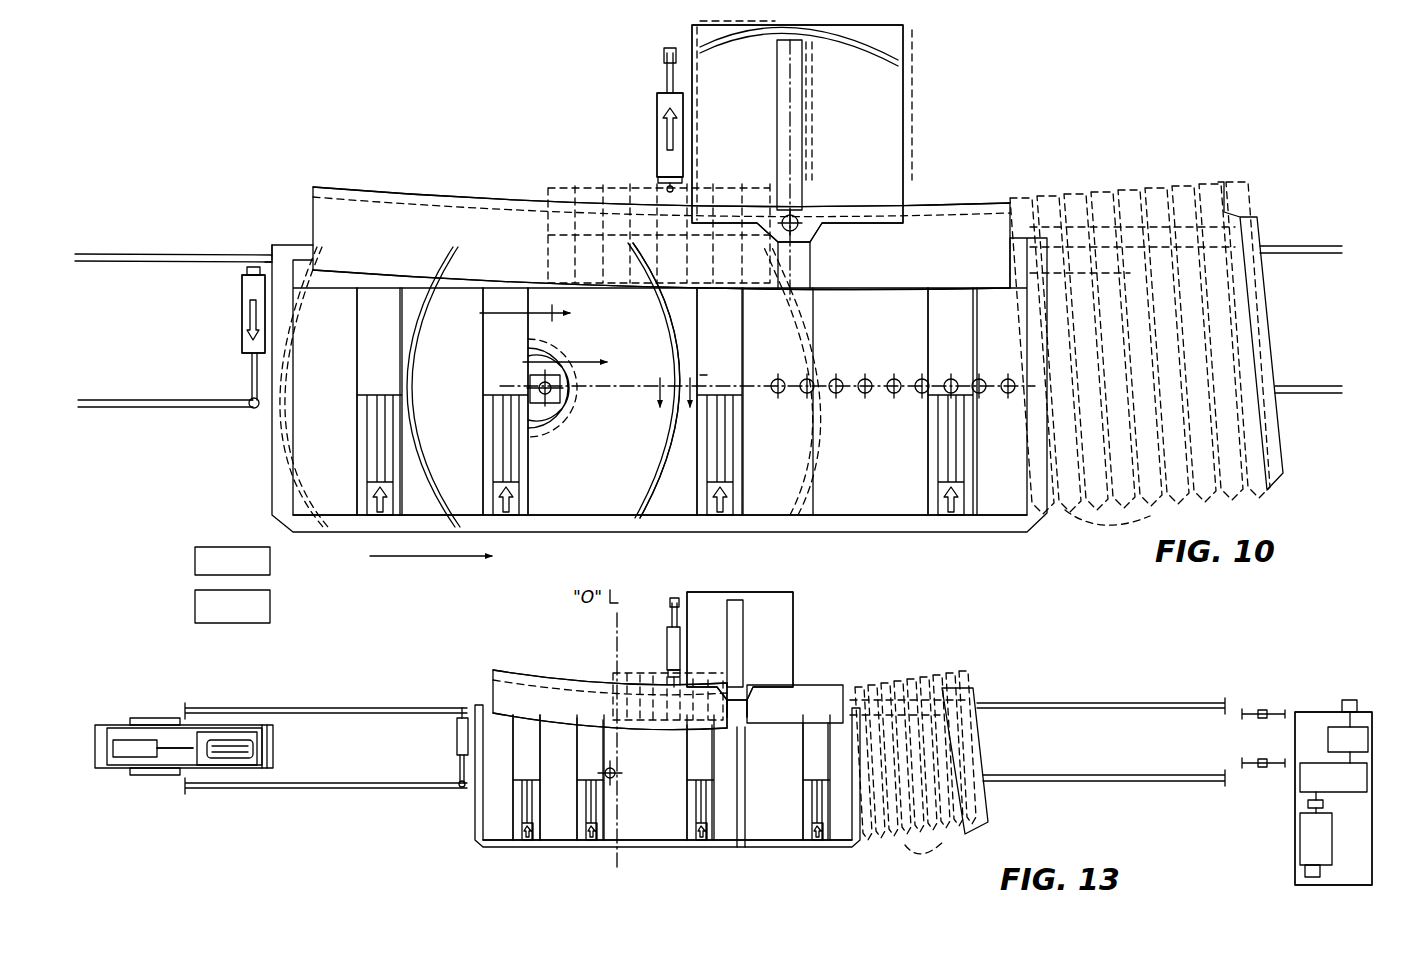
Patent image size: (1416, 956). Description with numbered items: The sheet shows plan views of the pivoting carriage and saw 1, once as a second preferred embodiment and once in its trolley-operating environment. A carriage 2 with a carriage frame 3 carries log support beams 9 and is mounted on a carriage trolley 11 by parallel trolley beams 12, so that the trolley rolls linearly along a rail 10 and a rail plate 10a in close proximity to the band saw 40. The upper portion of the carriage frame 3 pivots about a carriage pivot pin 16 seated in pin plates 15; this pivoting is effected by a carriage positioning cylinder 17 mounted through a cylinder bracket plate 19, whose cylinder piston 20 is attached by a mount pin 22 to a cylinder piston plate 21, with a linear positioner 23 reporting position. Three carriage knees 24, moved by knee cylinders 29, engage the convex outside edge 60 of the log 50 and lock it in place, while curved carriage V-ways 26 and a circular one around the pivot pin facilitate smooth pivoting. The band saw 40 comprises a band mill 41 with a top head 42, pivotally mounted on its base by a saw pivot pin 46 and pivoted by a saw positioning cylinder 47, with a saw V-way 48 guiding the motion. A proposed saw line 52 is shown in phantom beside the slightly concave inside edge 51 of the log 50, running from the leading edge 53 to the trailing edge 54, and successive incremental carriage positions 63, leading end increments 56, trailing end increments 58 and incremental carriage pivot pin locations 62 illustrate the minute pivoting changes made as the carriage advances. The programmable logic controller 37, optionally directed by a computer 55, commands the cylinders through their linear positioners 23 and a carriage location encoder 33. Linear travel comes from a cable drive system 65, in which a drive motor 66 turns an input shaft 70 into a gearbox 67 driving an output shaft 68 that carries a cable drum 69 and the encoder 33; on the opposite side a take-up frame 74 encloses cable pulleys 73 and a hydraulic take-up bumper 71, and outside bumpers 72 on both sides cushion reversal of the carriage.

In FIG. 10, the pivoting carriage and saw 1 is at (1040, 126).
In FIG. 13, the pivoting carriage and saw 1 is at (888, 638).
In FIG. 10, the carriage 2 is at (619, 548).
In FIG. 13, the carriage 2 is at (466, 849).
In FIG. 10, the carriage frame 3 is at (712, 533).
In FIG. 13, the carriage frame 3 is at (600, 846).
In FIG. 10, the log support beams 9 is at (280, 487).
In FIG. 13, the log support beams 9 is at (474, 823).
In FIG. 10, the rail 10 is at (126, 263).
In FIG. 13, the rail 10 is at (350, 789).
In FIG. 10, the rail plate 10a is at (1298, 254).
In FIG. 13, the rail plate 10a is at (355, 708).
In FIG. 10, the carriage trolley 11 is at (745, 356).
In FIG. 10, the trolley beams 12 is at (760, 511).
In FIG. 10, the pin plates 15 is at (540, 428).
In FIG. 10, the carriage pivot pin 16 is at (565, 398).
In FIG. 13, the carriage pivot pin 16 is at (620, 775).
In FIG. 10, the carriage positioning cylinder 17 is at (236, 327).
In FIG. 13, the carriage positioning cylinder 17 is at (453, 737).
In FIG. 10, the cylinder bracket plate 19 is at (270, 248).
In FIG. 10, the cylinder piston 20 is at (252, 371).
In FIG. 13, the cylinder piston 20 is at (459, 761).
In FIG. 10, the cylinder piston plate 21 is at (262, 421).
In FIG. 13, the cylinder piston plate 21 is at (460, 787).
In FIG. 10, the mount pin 22 is at (250, 271).
In FIG. 10, the linear positioner 23 is at (248, 313).
In FIG. 10, the carriage knees 24 is at (397, 369).
In FIG. 13, the carriage knees 24 is at (516, 764).
In FIG. 10, the carriage V-ways 26 is at (307, 484).
In FIG. 10, the knee cylinders 29 is at (489, 500).
In FIG. 13, the knee cylinders 29 is at (527, 831).
In FIG. 13, the carriage location encoder 33 is at (1351, 700).
In FIG. 10, the programmable logic controller 37 is at (256, 564).
In FIG. 10, the band saw 40 is at (949, 101).
In FIG. 13, the band saw 40 is at (807, 613).
In FIG. 10, the band mill 41 is at (912, 170).
In FIG. 13, the band mill 41 is at (799, 661).
In FIG. 10, the top head 42 is at (805, 96).
In FIG. 13, the top head 42 is at (742, 621).
In FIG. 10, the saw pivot pin 46 is at (798, 217).
In FIG. 13, the saw pivot pin 46 is at (738, 691).
In FIG. 10, the saw positioning cylinder 47 is at (656, 111).
In FIG. 13, the saw positioning cylinder 47 is at (664, 654).
In FIG. 10, the saw V-way 48 is at (832, 46).
In FIG. 10, the log 50 is at (428, 192).
In FIG. 13, the log 50 is at (519, 668).
In FIG. 10, the inside edge 51 is at (512, 198).
In FIG. 10, the proposed saw line 52 is at (482, 206).
In FIG. 13, the proposed saw line 52 is at (558, 690).
In FIG. 10, the leading edge 53 is at (1228, 199).
In FIG. 13, the leading edge 53 is at (838, 700).
In FIG. 13, the trailing edge 54 is at (490, 683).
In FIG. 10, the computer 55 is at (256, 606).
In FIG. 10, the leading end increments 56 is at (1048, 174).
In FIG. 13, the leading end increments 56 is at (926, 660).
In FIG. 10, the trailing end increments 58 is at (645, 187).
In FIG. 13, the trailing end increments 58 is at (630, 673).
In FIG. 10, the outside edge 60 is at (608, 290).
In FIG. 13, the outside edge 60 is at (480, 756).
In FIG. 10, the incremental carriage pivot pin locations 62 is at (862, 395).
In FIG. 10, the incremental carriage positions 63 is at (1107, 523).
In FIG. 13, the incremental carriage positions 63 is at (925, 858).
In FIG. 13, the cable drive system 65 is at (1283, 825).
In FIG. 13, the drive motor 66 is at (1325, 836).
In FIG. 13, the gearbox 67 is at (1385, 775).
In FIG. 13, the output shaft 68 is at (1369, 712).
In FIG. 13, the cable drum 69 is at (1366, 741).
In FIG. 13, the input shaft 70 is at (1310, 806).
In FIG. 13, the hydraulic take-up bumper 71 is at (130, 751).
In FIG. 13, the outside bumpers 72 is at (155, 712).
In FIG. 13, the cable pulleys 73 is at (240, 766).
In FIG. 13, the take-up frame 74 is at (207, 769).